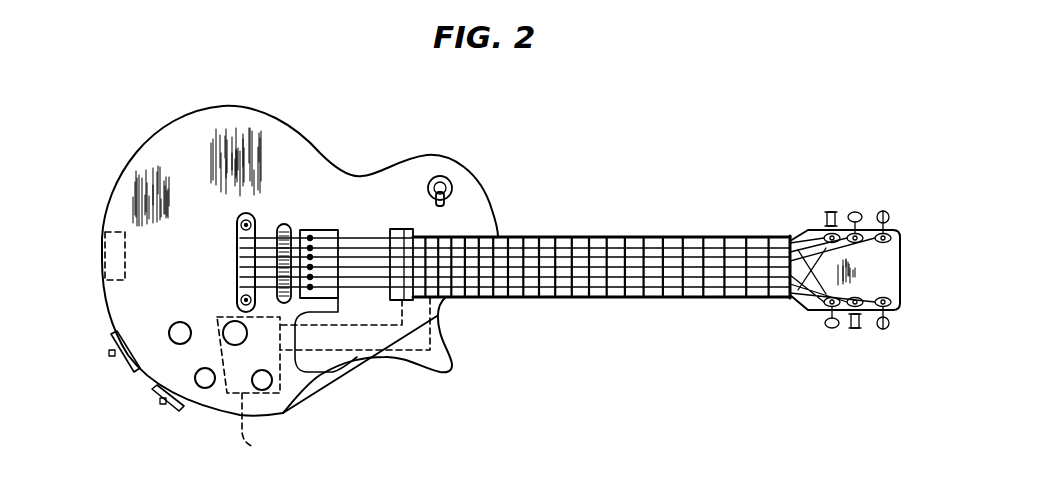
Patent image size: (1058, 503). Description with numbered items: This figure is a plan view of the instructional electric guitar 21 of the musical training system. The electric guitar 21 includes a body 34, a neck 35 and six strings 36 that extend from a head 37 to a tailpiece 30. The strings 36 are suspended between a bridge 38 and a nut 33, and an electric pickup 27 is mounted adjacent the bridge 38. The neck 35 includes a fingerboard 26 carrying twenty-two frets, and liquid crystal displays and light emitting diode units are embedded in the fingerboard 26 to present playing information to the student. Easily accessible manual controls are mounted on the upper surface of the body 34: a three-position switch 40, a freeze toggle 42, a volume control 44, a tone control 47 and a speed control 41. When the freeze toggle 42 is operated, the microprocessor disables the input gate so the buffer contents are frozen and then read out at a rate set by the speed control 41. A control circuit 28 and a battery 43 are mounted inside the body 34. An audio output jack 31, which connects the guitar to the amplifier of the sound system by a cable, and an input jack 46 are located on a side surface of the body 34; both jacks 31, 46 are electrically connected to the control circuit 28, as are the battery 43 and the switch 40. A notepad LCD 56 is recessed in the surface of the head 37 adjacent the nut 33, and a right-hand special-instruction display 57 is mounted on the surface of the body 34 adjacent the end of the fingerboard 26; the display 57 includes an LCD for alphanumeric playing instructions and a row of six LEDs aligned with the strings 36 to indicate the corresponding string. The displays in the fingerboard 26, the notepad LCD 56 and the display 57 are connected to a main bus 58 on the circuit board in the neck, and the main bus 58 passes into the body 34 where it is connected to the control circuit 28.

The electric guitar 21 is at (549, 150).
The fingerboard 26 is at (643, 237).
The electric pickup 27 is at (327, 230).
The control circuit 28 is at (263, 427).
The tailpiece 30 is at (243, 222).
The audio output jack 31 is at (163, 406).
The nut 33 is at (790, 242).
The body 34 is at (288, 132).
The neck 35 is at (663, 287).
The strings 36 is at (365, 238).
The head 37 is at (896, 279).
The bridge 38 is at (288, 223).
The three-position switch 40 is at (453, 183).
The speed control 41 is at (265, 384).
The freeze toggle 42 is at (228, 324).
The battery 43 is at (105, 243).
The volume control 44 is at (172, 325).
The input jack 46 is at (117, 357).
The tone control 47 is at (196, 378).
The notepad LCD 56 is at (820, 282).
The special-instruction display 57 is at (404, 232).
The main bus 58 is at (433, 330).